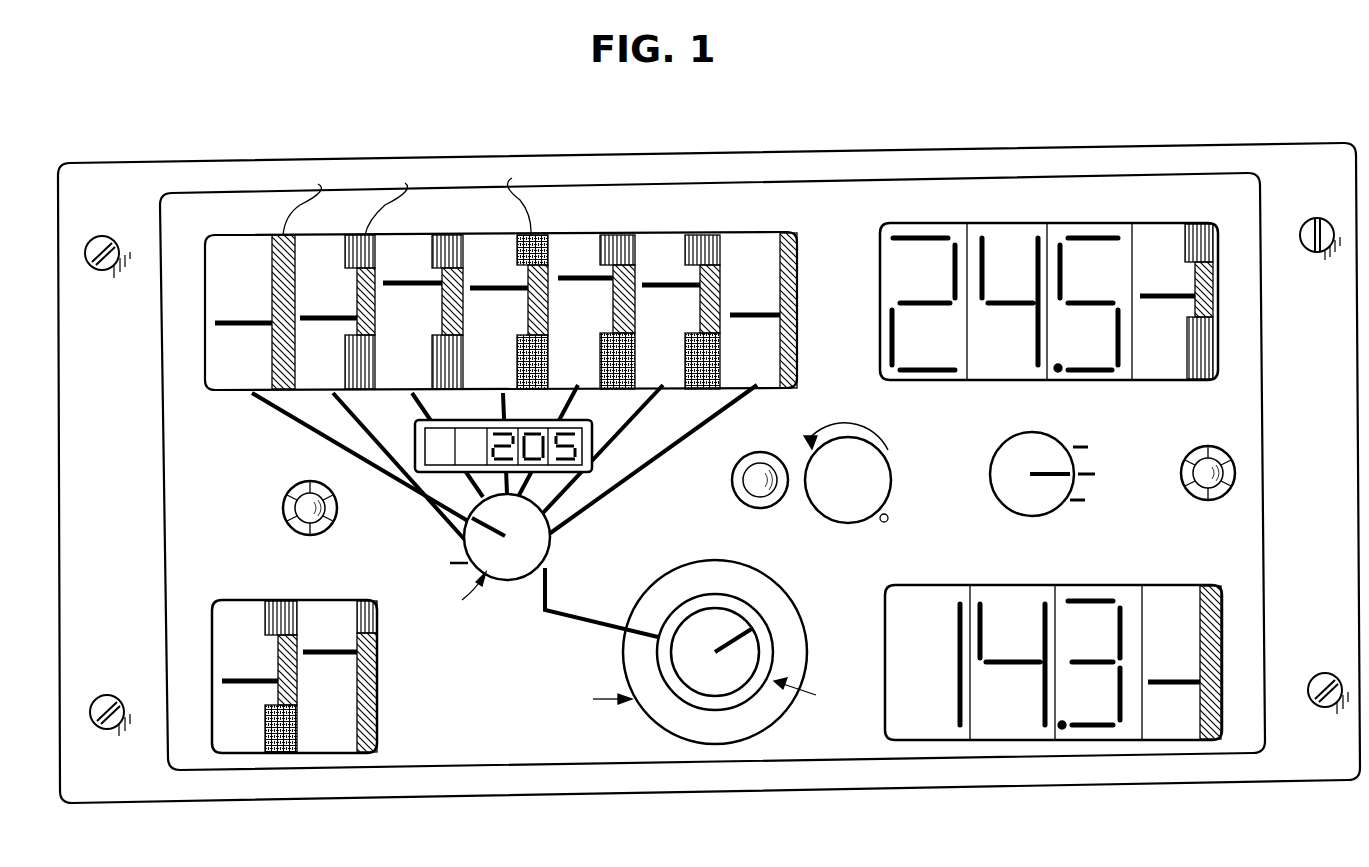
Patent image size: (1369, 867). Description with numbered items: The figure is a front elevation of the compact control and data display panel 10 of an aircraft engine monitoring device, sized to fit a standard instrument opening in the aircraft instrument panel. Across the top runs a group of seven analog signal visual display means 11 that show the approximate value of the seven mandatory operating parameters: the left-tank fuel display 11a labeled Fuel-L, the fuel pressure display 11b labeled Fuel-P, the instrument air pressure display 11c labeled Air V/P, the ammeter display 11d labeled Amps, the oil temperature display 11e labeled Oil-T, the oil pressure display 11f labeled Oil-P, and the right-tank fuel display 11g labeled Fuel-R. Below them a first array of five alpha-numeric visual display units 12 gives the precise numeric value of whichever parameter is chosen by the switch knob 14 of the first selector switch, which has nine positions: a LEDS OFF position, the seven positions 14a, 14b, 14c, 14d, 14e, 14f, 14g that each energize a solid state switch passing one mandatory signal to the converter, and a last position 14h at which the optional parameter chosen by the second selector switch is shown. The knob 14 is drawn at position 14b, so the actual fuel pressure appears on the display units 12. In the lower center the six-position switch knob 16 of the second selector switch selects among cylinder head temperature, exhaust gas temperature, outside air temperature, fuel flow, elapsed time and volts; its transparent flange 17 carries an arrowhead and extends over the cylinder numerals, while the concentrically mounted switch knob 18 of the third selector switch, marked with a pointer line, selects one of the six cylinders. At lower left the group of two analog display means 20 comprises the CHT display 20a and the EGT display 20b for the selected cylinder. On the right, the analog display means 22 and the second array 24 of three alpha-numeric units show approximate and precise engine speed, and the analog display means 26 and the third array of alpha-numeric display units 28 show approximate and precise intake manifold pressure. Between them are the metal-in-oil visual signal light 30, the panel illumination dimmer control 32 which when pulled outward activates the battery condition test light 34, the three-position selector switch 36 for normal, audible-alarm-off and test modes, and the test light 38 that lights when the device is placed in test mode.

The control and data display panel 10 is at (133, 185).
The analog signal visual display means 11 is at (455, 299).
The Fuel-L display 11a is at (222, 392).
The Fuel-P display 11b is at (316, 392).
The Air V/P display 11c is at (395, 392).
The Amps display 11d is at (468, 392).
The Oil-T display 11e is at (562, 391).
The Oil-P display 11f is at (648, 391).
The Fuel-R display 11g is at (735, 389).
The alpha-numeric visual display units 12 is at (410, 440).
The switch knob 14 is at (508, 580).
The selectable position 14a is at (430, 512).
The selectable position 14b is at (455, 496).
The selectable position 14c is at (470, 482).
The selectable position 14d is at (560, 482).
The selectable position 14e is at (550, 500).
The selectable position 14f is at (551, 527).
The selectable position 14g is at (553, 535).
The selectable position 14h is at (545, 605).
The switch knob 16 is at (676, 693).
The flange 17 is at (682, 725).
The switch knob 18 is at (748, 702).
The analog signal visual display means 20 is at (249, 702).
The CHT display 20a is at (250, 752).
The EGT display 20b is at (332, 752).
The analog signal visual display means 22 is at (1187, 222).
The second array of alpha-numeric visual display units 24 is at (912, 222).
The analog signal visual display means 26 is at (1182, 585).
The third array of alpha-numeric visual display units 28 is at (905, 592).
The visual signal light 30 is at (292, 488).
The panel illumination dimmer control 32 is at (890, 470).
The battery condition test light 34 is at (746, 478).
The three-position selector switch 36 is at (1037, 442).
The test light 38 is at (1213, 448).